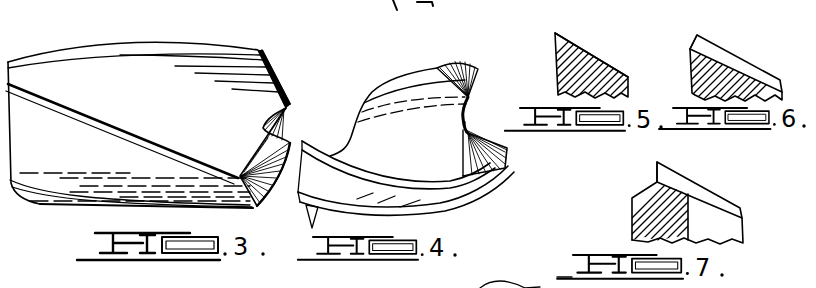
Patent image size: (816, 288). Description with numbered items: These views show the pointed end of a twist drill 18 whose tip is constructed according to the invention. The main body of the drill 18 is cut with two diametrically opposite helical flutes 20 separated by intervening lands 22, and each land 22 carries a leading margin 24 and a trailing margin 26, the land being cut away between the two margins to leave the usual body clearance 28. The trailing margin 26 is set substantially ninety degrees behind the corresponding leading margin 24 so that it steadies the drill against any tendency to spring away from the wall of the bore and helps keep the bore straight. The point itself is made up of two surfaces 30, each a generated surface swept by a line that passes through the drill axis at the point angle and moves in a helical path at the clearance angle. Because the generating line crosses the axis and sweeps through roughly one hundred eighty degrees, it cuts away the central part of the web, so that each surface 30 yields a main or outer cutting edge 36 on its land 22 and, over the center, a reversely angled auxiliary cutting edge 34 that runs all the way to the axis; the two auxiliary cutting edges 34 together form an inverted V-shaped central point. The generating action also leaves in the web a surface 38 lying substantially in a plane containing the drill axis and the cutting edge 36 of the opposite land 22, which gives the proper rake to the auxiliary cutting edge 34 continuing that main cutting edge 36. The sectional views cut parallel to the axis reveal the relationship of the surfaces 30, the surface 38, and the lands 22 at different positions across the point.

In FIG. 3, the drill 18 is at (135, 40).
In FIG. 4, the drill 18 is at (417, 70).
In FIG. 5, the drill 18 is at (552, 50).
In FIG. 6, the drill 18 is at (688, 78).
In FIG. 7, the drill 18 is at (627, 212).
In FIG. 3, the flutes 20 is at (62, 58).
In FIG. 4, the flutes 20 is at (396, 130).
In FIG. 7, the flutes 20 is at (732, 232).
In FIG. 3, the lands 22 is at (188, 196).
In FIG. 4, the lands 22 is at (400, 205).
In FIG. 3, the leading margin 24 is at (193, 53).
In FIG. 4, the leading margin 24 is at (397, 88).
In FIG. 3, the trailing margin 26 is at (168, 152).
In FIG. 4, the trailing margin 26 is at (465, 62).
In FIG. 3, the body clearance 28 is at (108, 165).
In FIG. 4, the body clearance 28 is at (337, 180).
In FIG. 4, the surfaces 30 is at (477, 87).
In FIG. 5, the surfaces 30 is at (584, 56).
In FIG. 6, the surfaces 30 is at (731, 57).
In FIG. 7, the surfaces 30 is at (697, 190).
In FIG. 3, the auxiliary cutting edge 34 is at (284, 137).
In FIG. 4, the auxiliary cutting edge 34 is at (452, 146).
In FIG. 3, the main cutting edge 36 is at (270, 197).
In FIG. 4, the main cutting edge 36 is at (452, 90).
In FIG. 3, the surface 38 is at (290, 107).
In FIG. 4, the surface 38 is at (477, 98).
In FIG. 6, the surface 38 is at (697, 36).
In FIG. 7, the surface 38 is at (656, 165).